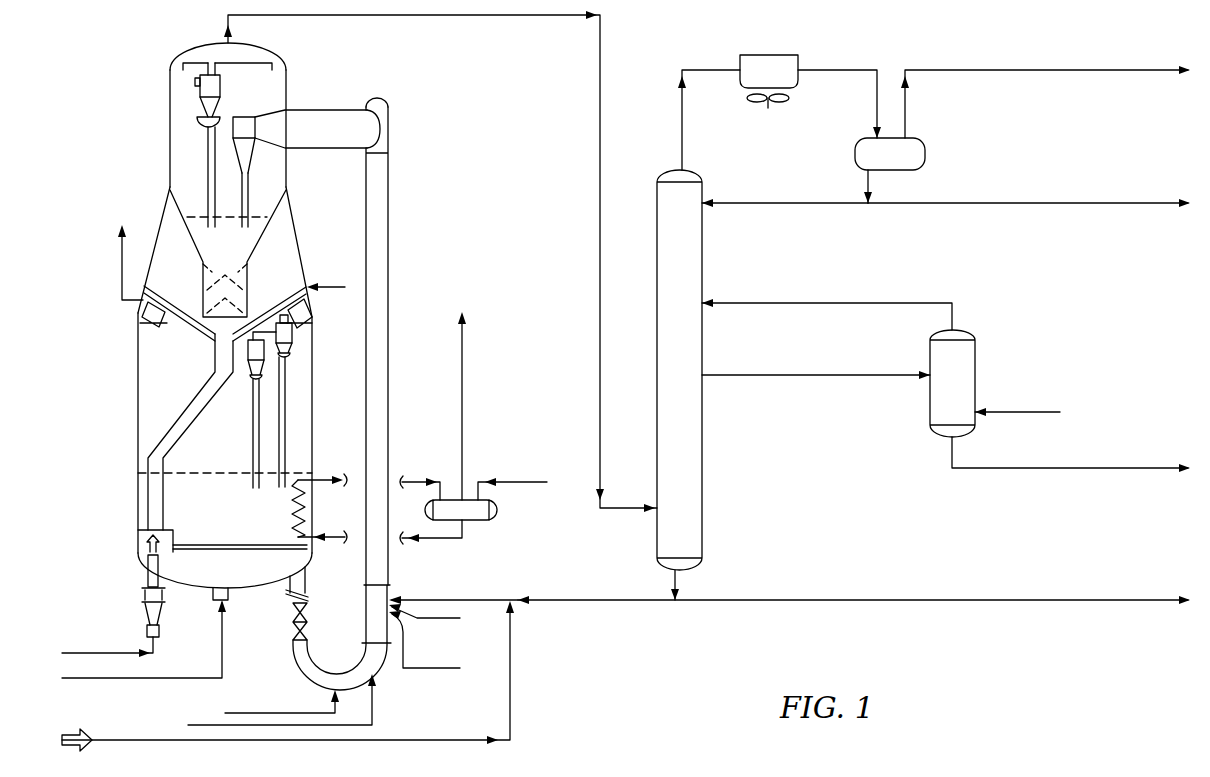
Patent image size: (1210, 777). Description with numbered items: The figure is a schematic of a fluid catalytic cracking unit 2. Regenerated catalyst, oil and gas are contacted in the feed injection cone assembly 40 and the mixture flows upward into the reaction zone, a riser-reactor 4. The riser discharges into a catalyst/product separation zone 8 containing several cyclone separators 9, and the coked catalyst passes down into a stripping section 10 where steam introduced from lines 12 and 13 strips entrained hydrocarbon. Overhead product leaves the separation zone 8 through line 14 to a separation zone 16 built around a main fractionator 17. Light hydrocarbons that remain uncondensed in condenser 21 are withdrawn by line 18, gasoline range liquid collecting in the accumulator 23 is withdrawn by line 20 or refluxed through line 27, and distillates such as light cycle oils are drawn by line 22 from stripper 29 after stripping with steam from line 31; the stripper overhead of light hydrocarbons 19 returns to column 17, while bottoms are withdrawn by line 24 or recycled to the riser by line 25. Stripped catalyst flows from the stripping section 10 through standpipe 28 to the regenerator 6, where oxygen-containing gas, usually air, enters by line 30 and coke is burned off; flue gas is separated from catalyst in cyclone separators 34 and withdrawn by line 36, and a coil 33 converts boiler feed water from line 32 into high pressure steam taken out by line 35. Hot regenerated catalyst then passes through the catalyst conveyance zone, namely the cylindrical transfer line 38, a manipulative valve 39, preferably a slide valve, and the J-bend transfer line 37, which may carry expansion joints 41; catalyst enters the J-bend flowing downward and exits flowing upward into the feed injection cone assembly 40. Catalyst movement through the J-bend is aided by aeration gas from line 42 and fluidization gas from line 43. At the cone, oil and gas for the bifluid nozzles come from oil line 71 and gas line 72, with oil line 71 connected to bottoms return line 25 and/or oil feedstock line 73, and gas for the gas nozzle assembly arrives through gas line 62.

The fluid catalytic cracking unit 2 is at (102, 178).
The riser-reactor 4 is at (389, 224).
The regenerator 6 is at (138, 340).
The catalyst/product separation zone 8 is at (172, 94).
The cyclone separators 9 is at (243, 115).
The stripping section 10 is at (204, 289).
The stripping gas line 12 is at (333, 287).
The stripping gas line 13 is at (96, 650).
The overhead product line 14 is at (515, 16).
The separation zone 16 is at (706, 54).
The main fractionator 17 is at (702, 290).
The light hydrocarbon withdrawal line 18 is at (1014, 70).
The stripper overhead 19 is at (896, 303).
The gasoline withdrawal line 20 is at (1028, 203).
The condenser 21 is at (786, 56).
The distillate withdrawal line 22 is at (1022, 468).
The accumulator 23 is at (925, 150).
The bottoms withdrawal line 24 is at (838, 600).
The bottoms return line 25 is at (630, 600).
The reflux line 27 is at (784, 203).
The standpipe 28 is at (215, 362).
The stripper 29 is at (976, 343).
The oxygen-containing gas line 30 is at (132, 678).
The steam line 31 is at (1058, 412).
The boiler feed water line 32 is at (519, 482).
The coil 33 is at (291, 512).
The cyclone separators 34 is at (266, 352).
The steam withdrawal line 35 is at (462, 385).
The flue gas line 36 is at (120, 267).
The J-bend transfer line 37 is at (332, 663).
The transfer line 38 is at (309, 552).
The manipulative valve 39 is at (292, 626).
The feed injection cone assembly 40 is at (389, 586).
The expansion joints 41 is at (308, 594).
The aeration gas line 42 is at (248, 713).
The fluidization gas line 43 is at (196, 725).
The gas line 62 is at (432, 670).
The oil line 71 is at (479, 600).
The gas line 72 is at (455, 618).
The oil feedstock line 73 is at (510, 690).